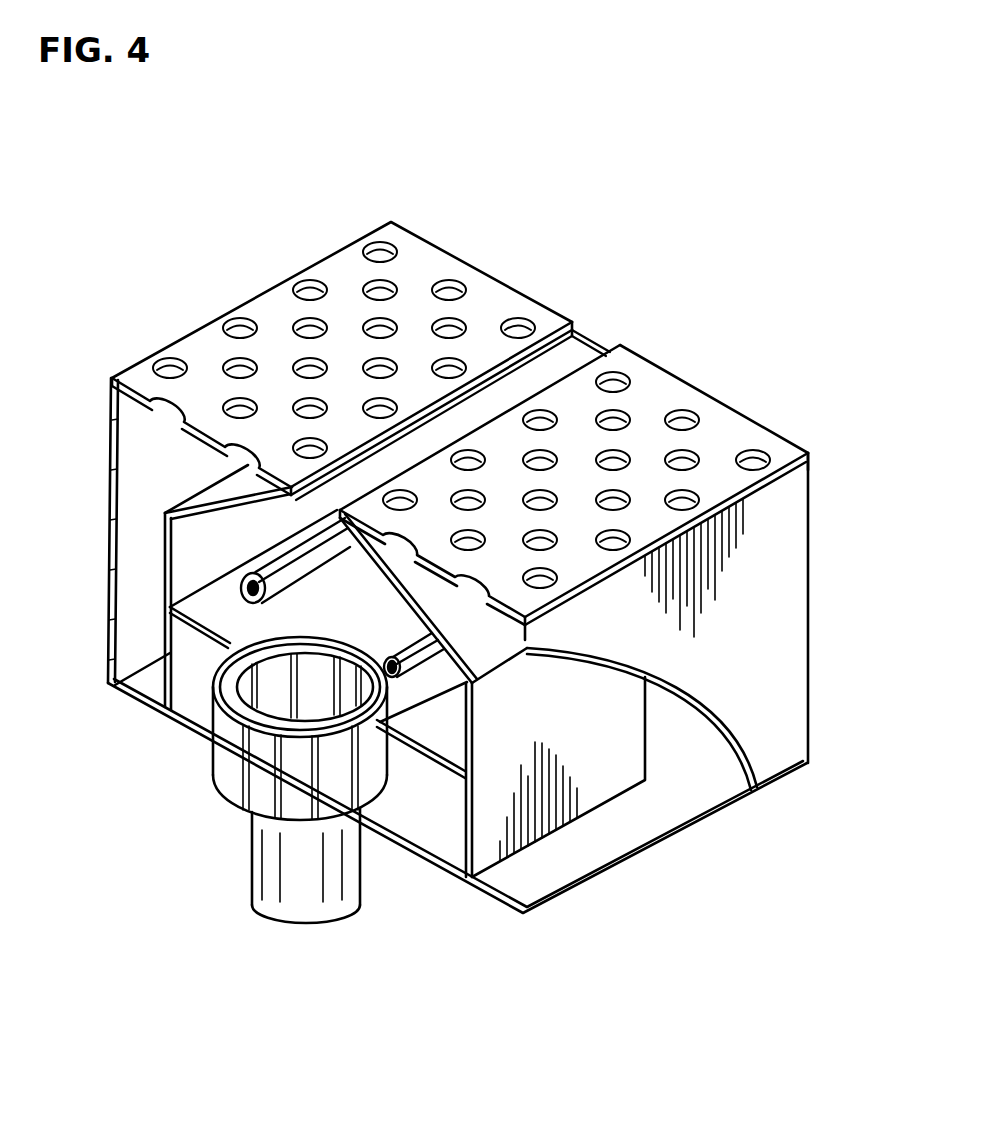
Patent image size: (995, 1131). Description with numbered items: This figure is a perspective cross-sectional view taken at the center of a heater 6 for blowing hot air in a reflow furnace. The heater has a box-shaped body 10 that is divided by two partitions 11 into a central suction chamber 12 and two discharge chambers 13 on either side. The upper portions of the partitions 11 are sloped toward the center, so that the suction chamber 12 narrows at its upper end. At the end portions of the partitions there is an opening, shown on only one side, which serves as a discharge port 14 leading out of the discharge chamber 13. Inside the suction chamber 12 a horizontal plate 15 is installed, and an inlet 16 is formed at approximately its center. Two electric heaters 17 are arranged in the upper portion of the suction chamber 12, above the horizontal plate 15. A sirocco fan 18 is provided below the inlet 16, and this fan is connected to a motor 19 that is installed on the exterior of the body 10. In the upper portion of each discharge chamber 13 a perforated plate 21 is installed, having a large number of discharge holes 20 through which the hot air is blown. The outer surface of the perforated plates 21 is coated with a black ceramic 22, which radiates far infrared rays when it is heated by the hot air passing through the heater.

The heater 6 is at (673, 893).
The box-shaped body 10 is at (480, 570).
The partition 11 is at (123, 693).
The suction chamber 12 is at (577, 360).
The discharge chamber 13 is at (150, 480).
The discharge port 14 is at (668, 737).
The horizontal plate 15 is at (175, 720).
The inlet 16 is at (304, 636).
The electric heater 17 is at (275, 548).
The sirocco fan 18 is at (263, 708).
The motor 19 is at (350, 895).
The discharge hole 20 is at (386, 248).
The perforated plate 21 is at (813, 455).
The black ceramic 22 is at (498, 403).